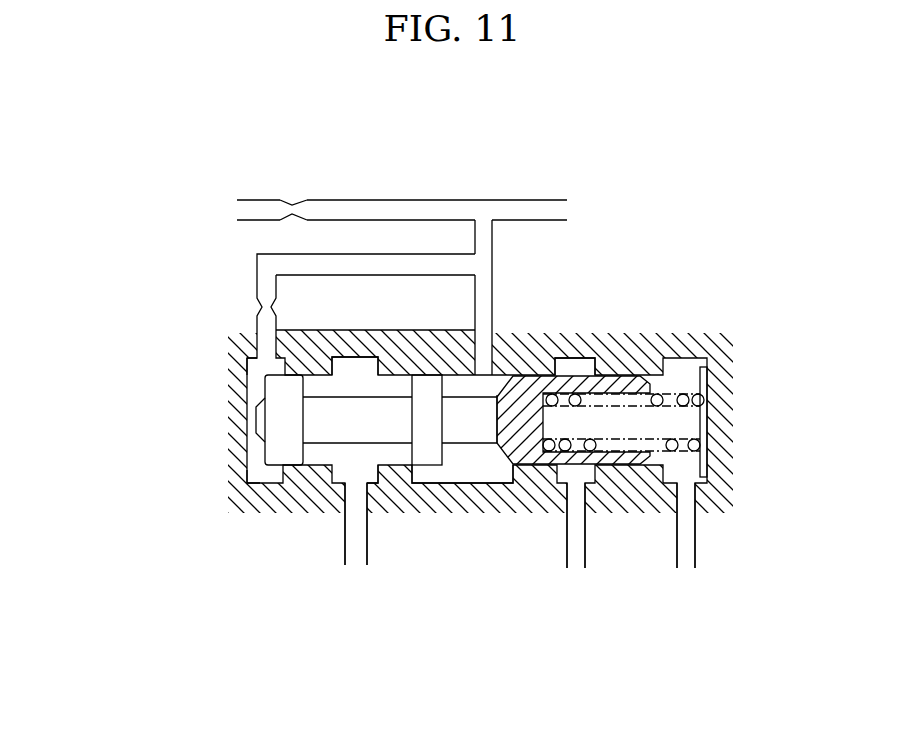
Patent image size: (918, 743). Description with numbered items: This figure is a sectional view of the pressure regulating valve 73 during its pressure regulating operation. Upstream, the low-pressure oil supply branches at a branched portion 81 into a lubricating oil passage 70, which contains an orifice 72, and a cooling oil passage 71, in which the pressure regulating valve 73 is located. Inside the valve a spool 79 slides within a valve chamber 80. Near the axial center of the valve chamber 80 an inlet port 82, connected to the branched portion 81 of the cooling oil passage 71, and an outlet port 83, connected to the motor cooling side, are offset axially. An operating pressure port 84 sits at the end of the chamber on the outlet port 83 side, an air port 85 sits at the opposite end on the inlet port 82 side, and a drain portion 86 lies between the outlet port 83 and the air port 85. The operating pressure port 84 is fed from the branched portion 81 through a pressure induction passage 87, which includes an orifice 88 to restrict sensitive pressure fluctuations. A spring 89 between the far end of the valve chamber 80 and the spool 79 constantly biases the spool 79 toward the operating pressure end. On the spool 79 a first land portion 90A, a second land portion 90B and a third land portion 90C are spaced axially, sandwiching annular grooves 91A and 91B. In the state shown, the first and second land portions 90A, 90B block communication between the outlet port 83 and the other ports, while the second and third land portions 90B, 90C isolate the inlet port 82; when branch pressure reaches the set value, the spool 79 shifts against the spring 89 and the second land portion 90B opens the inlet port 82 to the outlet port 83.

The lubricating oil passage 70 is at (415, 200).
The orifice 72 is at (292, 203).
The branched portion 81 is at (483, 208).
The pressure induction passage 87 is at (283, 254).
The orifice 88 is at (257, 302).
The pressure regulating valve 73 is at (729, 338).
The inlet port 82 is at (520, 367).
The third land portion 90C is at (630, 377).
The spring 89 is at (690, 403).
The operating pressure port 84 is at (243, 373).
The first land portion 90A is at (270, 373).
The valve chamber 80 is at (237, 477).
The spool 79 is at (277, 447).
The annular groove 91A is at (340, 397).
The second land portion 90B is at (418, 378).
The annular groove 91B is at (478, 470).
The cooling oil passage 71 is at (360, 510).
The outlet port 83 is at (377, 475).
The drain portion 86 is at (572, 487).
The air port 85 is at (682, 487).